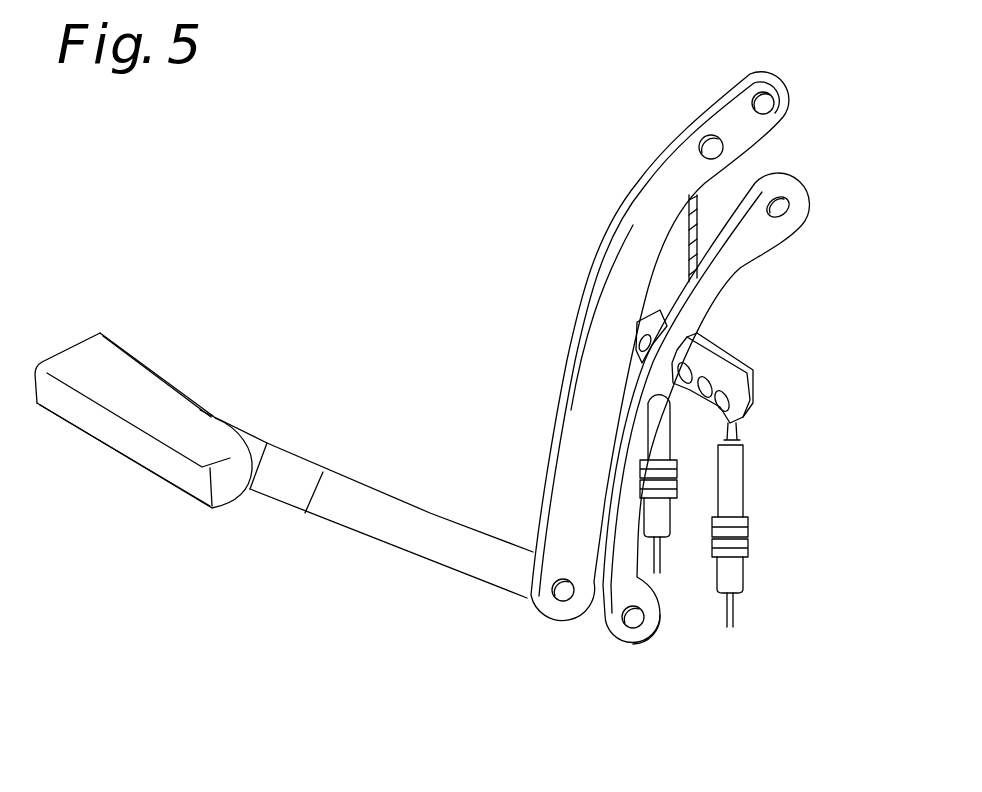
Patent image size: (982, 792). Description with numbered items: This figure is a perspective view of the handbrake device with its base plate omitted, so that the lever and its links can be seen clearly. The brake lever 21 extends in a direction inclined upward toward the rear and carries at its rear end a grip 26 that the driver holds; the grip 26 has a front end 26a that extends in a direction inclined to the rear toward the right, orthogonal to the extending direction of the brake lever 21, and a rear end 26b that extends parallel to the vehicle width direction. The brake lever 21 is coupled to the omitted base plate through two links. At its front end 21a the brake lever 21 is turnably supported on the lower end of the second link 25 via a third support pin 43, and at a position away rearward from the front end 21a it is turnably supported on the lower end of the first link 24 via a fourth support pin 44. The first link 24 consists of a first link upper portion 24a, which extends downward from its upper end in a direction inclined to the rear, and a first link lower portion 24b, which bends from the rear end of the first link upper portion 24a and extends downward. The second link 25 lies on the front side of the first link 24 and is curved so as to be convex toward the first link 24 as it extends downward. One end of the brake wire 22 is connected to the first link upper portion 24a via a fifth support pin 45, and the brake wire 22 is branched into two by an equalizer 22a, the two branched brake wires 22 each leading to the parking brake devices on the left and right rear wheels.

The brake lever 21 is at (390, 515).
The front end 21a is at (655, 608).
The brake wire 22 is at (700, 220).
The equalizer 22a is at (750, 417).
The first link 24 is at (590, 395).
The first link upper portion 24a is at (737, 125).
The first link lower portion 24b is at (610, 333).
The second link 25 is at (727, 270).
The grip 26 is at (102, 357).
The front end 26a is at (163, 383).
The rear end 26b is at (110, 436).
The third support pin 43 is at (633, 622).
The fourth support pin 44 is at (566, 600).
The fifth support pin 45 is at (710, 158).